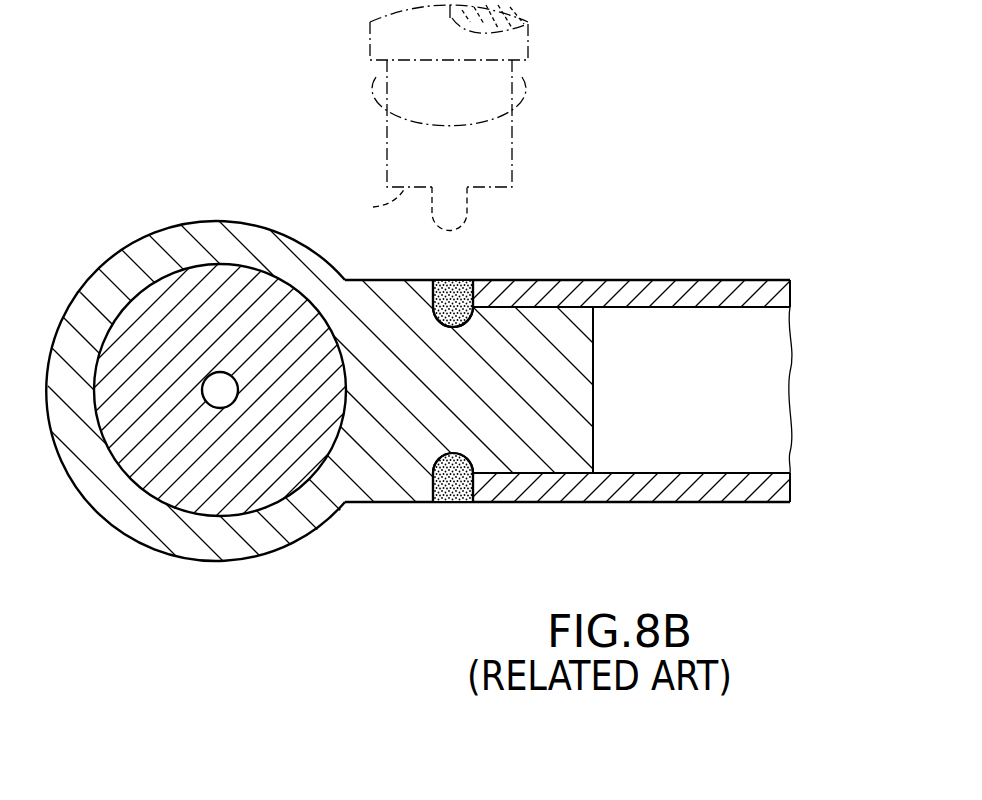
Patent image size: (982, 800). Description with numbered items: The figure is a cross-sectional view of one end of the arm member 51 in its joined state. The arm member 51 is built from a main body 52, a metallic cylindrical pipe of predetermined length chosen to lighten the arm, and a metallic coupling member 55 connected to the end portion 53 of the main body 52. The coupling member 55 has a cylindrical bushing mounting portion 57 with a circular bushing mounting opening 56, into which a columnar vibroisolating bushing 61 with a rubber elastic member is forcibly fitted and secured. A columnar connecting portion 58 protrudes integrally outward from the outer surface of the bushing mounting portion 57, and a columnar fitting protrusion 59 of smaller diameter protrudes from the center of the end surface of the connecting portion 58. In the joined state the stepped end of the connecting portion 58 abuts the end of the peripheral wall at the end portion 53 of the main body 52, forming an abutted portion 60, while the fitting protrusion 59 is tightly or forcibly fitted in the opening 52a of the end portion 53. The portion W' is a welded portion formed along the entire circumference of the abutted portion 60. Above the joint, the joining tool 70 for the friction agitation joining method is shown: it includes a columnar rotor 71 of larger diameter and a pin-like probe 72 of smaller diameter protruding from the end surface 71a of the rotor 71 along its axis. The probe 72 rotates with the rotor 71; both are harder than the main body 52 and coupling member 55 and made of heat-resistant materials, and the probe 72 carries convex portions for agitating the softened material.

The arm member 51 is at (419, 369).
The main body 52 is at (735, 282).
The opening of the end portion 52a is at (657, 449).
The end portion 53 is at (498, 289).
The coupling member 55 is at (212, 223).
The bushing mounting opening 56 is at (253, 508).
The bushing mounting portion 57 is at (119, 277).
The connecting portion 58 is at (385, 482).
The fitting protrusion 59 is at (576, 395).
The abutted portion 60 is at (444, 279).
The vibroisolating bushing 61 is at (177, 466).
The joining tool 70 is at (533, 43).
The rotor 71 is at (400, 138).
The end surface of the rotor 71a is at (373, 207).
The probe 72 is at (462, 224).
The welded portion W is at (432, 303).